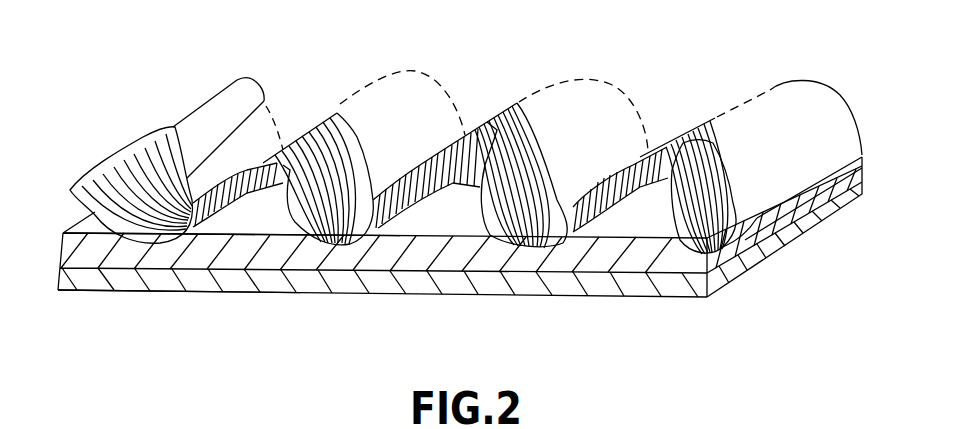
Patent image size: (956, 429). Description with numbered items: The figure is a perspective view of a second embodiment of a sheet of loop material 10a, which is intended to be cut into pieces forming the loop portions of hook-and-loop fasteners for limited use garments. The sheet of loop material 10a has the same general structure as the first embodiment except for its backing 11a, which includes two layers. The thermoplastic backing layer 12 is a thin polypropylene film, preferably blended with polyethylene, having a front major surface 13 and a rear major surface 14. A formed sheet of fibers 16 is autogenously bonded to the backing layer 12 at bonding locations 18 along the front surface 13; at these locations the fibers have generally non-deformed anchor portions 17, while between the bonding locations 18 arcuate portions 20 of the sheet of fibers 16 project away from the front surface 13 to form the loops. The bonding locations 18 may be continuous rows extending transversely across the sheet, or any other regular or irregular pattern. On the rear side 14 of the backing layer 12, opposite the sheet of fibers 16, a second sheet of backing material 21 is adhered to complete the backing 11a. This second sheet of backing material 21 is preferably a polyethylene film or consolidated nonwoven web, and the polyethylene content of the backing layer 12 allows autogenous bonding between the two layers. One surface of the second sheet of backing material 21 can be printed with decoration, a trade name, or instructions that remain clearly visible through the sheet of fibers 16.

The sheet of loop material 10a is at (808, 172).
The backing 11a is at (718, 275).
The thermoplastic backing layer 12 is at (158, 257).
The front major surface 13 is at (240, 226).
The rear major surface 14 is at (508, 277).
The sheet of fibers 16 is at (605, 120).
The anchor portions 17 is at (497, 266).
The bonding locations 18 is at (312, 128).
The arcuate portions 20 is at (668, 150).
The second sheet of backing material 21 is at (583, 293).